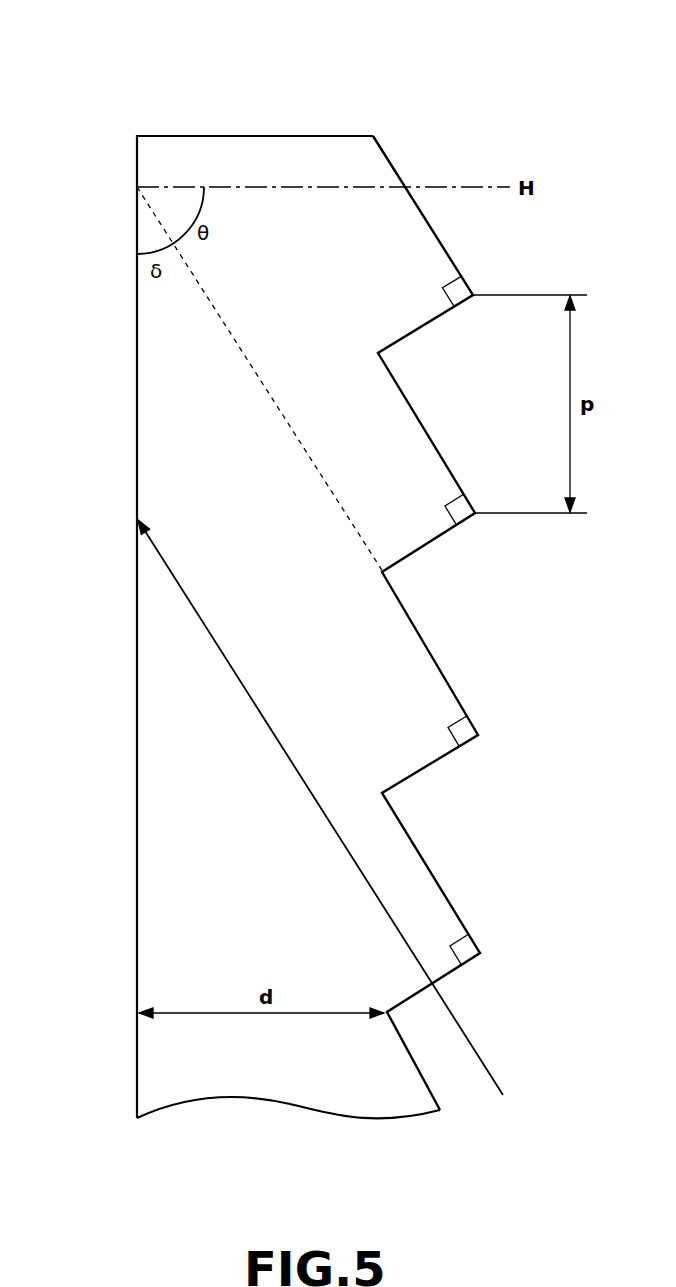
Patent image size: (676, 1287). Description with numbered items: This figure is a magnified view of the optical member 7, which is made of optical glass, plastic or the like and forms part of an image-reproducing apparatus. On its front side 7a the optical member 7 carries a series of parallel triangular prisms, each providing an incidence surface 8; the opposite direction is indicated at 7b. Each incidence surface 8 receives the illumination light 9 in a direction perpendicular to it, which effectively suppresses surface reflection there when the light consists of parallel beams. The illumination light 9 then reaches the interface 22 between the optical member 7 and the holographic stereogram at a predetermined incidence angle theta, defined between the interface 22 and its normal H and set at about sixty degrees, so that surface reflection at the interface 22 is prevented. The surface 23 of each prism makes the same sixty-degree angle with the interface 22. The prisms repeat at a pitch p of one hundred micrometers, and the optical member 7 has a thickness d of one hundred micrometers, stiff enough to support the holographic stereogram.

The optical member 7 is at (262, 131).
The front side 7a is at (320, 98).
The blade direction 7b is at (207, 98).
The incidence surface 8 is at (440, 537).
The illumination light 9 is at (482, 1052).
The interface 22 is at (137, 347).
The surface 23 is at (438, 663).